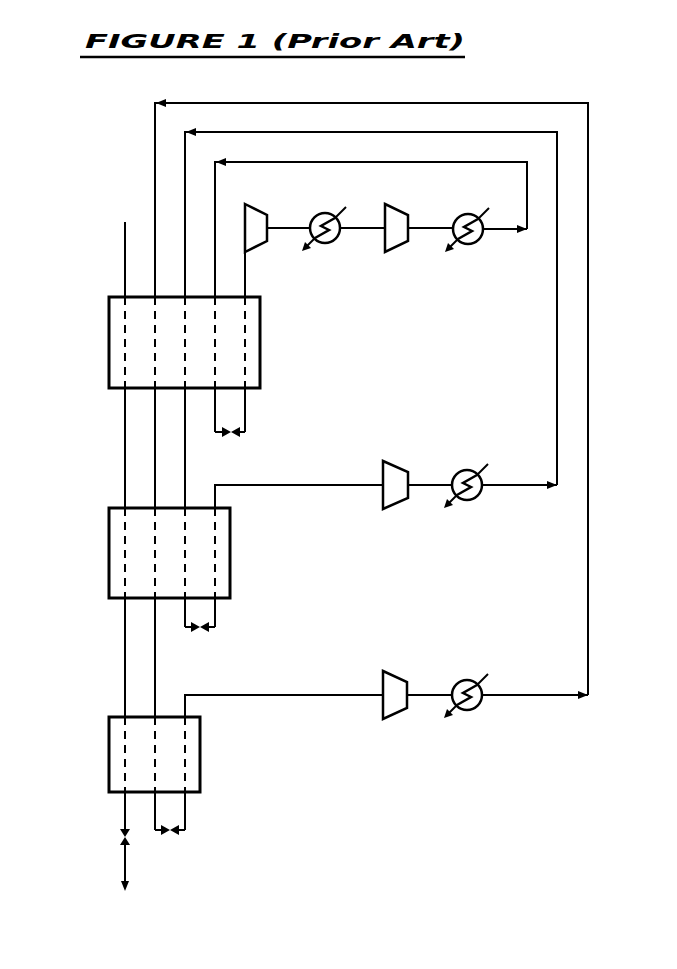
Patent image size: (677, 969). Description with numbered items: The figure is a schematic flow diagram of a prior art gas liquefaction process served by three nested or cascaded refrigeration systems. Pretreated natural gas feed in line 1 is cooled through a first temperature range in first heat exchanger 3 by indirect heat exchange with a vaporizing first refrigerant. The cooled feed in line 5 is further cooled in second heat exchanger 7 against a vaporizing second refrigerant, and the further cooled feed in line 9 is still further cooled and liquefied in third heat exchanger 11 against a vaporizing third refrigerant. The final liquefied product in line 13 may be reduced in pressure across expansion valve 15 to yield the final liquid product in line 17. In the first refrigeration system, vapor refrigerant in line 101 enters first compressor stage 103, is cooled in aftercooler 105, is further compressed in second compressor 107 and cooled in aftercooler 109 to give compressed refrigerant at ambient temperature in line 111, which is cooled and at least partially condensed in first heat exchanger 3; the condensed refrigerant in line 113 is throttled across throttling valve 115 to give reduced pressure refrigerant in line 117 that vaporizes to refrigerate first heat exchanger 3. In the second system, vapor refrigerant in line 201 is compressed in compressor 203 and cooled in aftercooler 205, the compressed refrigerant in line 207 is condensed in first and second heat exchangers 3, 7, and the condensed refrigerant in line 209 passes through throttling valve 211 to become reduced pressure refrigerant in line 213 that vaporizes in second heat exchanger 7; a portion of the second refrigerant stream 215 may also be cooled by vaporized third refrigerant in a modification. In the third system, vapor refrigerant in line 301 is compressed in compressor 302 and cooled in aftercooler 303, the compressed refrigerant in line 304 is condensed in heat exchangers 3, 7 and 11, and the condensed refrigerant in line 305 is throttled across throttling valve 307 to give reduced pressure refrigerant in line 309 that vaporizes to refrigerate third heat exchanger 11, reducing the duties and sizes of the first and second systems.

The feed gas line 1 is at (125, 253).
The first heat exchanger 3 is at (109, 339).
The cooled feed line 5 is at (125, 434).
The second heat exchanger 7 is at (109, 545).
The further cooled feed line 9 is at (125, 643).
The third heat exchanger 11 is at (109, 749).
The final liquefied product line 13 is at (125, 810).
The expansion valve 15 is at (115, 842).
The final liquid product line 17 is at (125, 859).
The vapor refrigerant line 101 is at (245, 268).
The first compressor stage 103 is at (245, 204).
The aftercooler 105 is at (318, 213).
The second compressor 107 is at (387, 254).
The aftercooler 109 is at (467, 246).
The compressed refrigerant line 111 is at (458, 170).
The condensed refrigerant line 113 is at (245, 399).
The throttling valve 115 is at (233, 440).
The reduced pressure refrigerant line 117 is at (218, 398).
The vapor refrigerant line 201 is at (305, 488).
The compressor 203 is at (383, 512).
The aftercooler 205 is at (463, 502).
The compressed refrigerant line 207 is at (557, 373).
The condensed refrigerant line 209 is at (193, 635).
The throttling valve 211 is at (207, 631).
The reduced pressure refrigerant line 213 is at (216, 623).
The second refrigerant stream 215 is at (212, 477).
The vapor refrigerant line 301 is at (330, 693).
The compressor 302 is at (383, 721).
The aftercooler 303 is at (463, 712).
The compressed refrigerant line 304 is at (588, 598).
The condensed refrigerant line 305 is at (157, 836).
The throttling valve 307 is at (177, 838).
The reduced pressure refrigerant line 309 is at (207, 815).